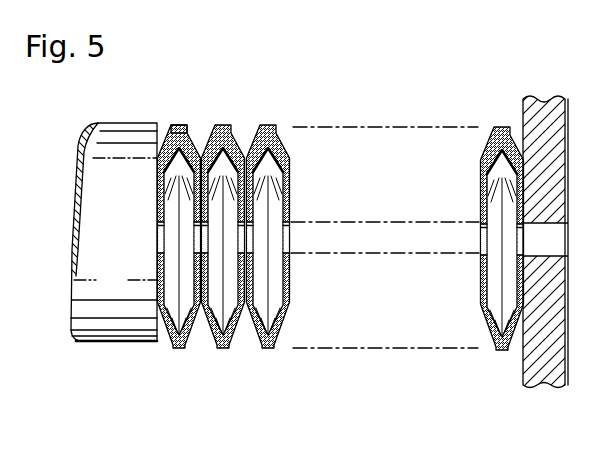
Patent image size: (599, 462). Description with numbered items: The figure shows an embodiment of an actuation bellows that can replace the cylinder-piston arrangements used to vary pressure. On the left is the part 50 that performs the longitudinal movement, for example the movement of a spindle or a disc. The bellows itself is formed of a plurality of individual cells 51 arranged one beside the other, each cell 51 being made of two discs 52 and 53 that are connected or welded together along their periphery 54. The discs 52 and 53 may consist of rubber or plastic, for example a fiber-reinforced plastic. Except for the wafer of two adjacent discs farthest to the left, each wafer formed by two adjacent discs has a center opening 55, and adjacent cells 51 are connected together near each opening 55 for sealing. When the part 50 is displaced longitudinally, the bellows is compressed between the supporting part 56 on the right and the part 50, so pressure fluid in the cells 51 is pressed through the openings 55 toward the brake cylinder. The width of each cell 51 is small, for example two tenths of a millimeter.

The part performing the longitudinal movement 50 is at (124, 338).
The individual cell 51 is at (246, 168).
The disc 52 is at (158, 272).
The disc 53 is at (200, 248).
The periphery 54 is at (178, 125).
The center opening 55 is at (290, 240).
The supporting part 56 is at (543, 378).